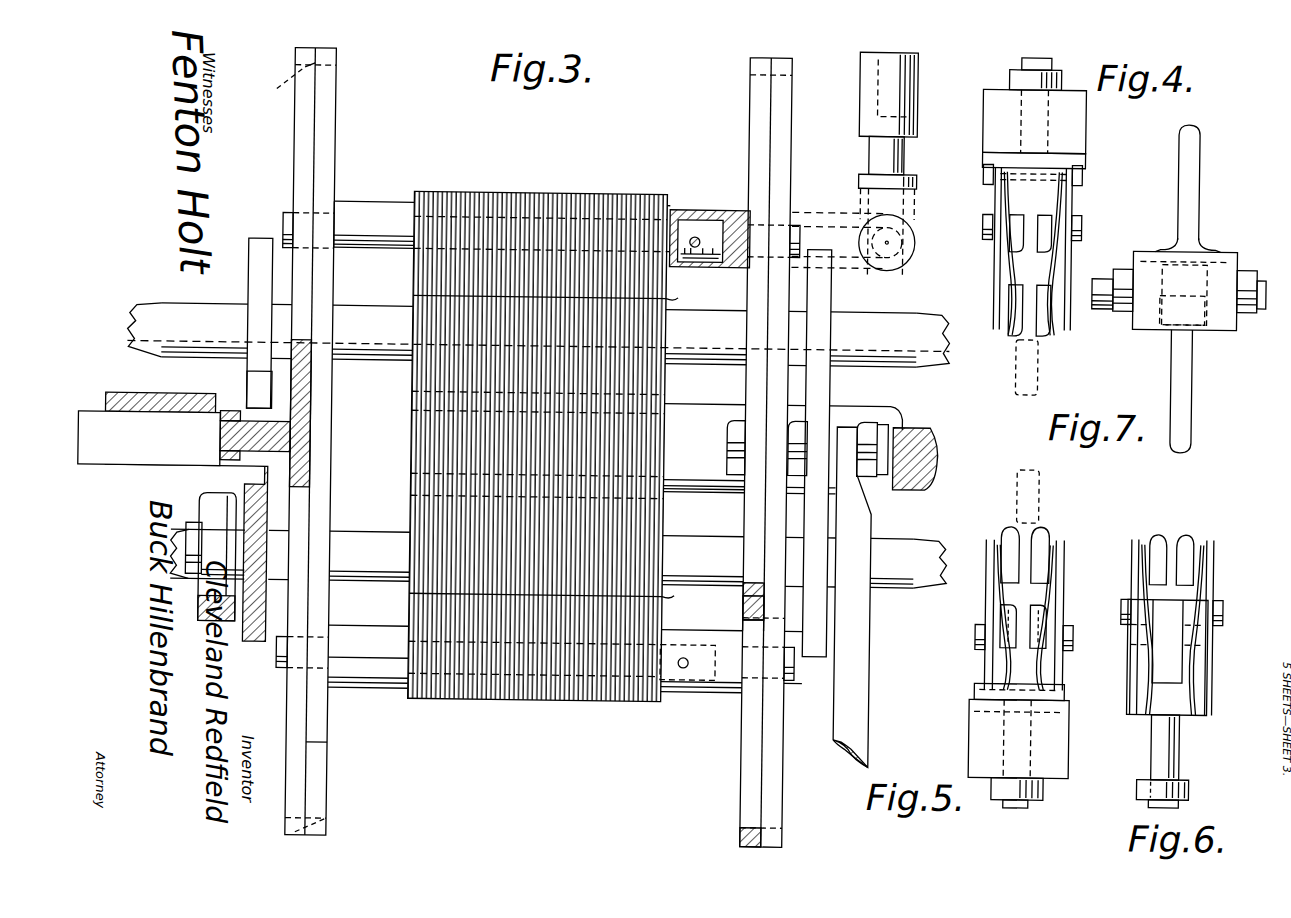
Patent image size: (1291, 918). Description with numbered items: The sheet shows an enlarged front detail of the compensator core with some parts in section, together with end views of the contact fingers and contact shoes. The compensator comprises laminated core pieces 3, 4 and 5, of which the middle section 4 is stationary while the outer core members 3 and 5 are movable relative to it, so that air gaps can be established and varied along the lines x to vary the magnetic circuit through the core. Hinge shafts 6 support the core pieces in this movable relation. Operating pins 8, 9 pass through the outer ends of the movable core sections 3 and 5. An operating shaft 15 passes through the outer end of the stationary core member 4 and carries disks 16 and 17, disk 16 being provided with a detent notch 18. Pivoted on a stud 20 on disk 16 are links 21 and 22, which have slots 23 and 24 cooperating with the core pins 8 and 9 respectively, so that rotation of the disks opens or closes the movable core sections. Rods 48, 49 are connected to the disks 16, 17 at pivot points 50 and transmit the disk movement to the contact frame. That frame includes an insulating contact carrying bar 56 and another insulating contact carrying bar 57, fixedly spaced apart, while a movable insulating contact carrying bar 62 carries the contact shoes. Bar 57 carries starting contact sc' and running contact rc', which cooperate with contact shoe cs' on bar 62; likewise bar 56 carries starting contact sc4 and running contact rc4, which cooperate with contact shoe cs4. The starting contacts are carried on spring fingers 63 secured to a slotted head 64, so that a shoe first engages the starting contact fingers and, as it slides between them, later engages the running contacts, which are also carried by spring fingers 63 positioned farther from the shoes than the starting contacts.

In FIG. 3, the core piece 3 is at (411, 270).
In FIG. 3, the middle core section 4 is at (411, 386).
In FIG. 3, the core piece 5 is at (411, 612).
In FIG. 3, the hinge shaft 6 is at (146, 322).
In FIG. 3, the operating pin 8 is at (282, 232).
In FIG. 3, the operating pin 9 is at (805, 684).
In FIG. 3, the operating shaft 15 is at (100, 415).
In FIG. 3, the disk 16 is at (250, 272).
In FIG. 3, the disk 17 is at (829, 296).
In FIG. 3, the detent notch 18 is at (252, 392).
In FIG. 3, the stud 20 is at (300, 436).
In FIG. 3, the link 21 is at (308, 141).
In FIG. 3, the link 22 is at (331, 747).
In FIG. 3, the slot 23 is at (284, 87).
In FIG. 3, the slot 24 is at (320, 814).
In FIG. 3, the rod 48 is at (203, 520).
In FIG. 3, the rod 49 is at (855, 630).
In FIG. 3, the pivot point 50 is at (895, 478).
In FIG. 3, the air gap line x is at (679, 449).
In FIG. 5, the insulating contact carrying bar 56 is at (1055, 748).
In FIG. 4, the insulating contact carrying bar 57 is at (1070, 124).
In FIG. 7, the movable insulating contact carrying bar 62 is at (1222, 322).
In FIG. 4, the spring finger 63 is at (1068, 265).
In FIG. 6, the spring finger 63 is at (1205, 612).
In FIG. 4, the slotted head 64 is at (1060, 186).
In FIG. 5, the slotted head 64 is at (1040, 670).
In FIG. 6, the slotted head 64 is at (1182, 672).
In FIG. 4, the running contact rc' is at (1071, 215).
In FIG. 4, the starting contact sc' is at (1062, 320).
In FIG. 4, the contact shoe cs' is at (1057, 368).
In FIG. 7, the contact shoe cs' is at (1204, 189).
In FIG. 7, the contact shoe cs4 is at (1193, 404).
In FIG. 5, the contact shoe cs4 is at (1037, 492).
In FIG. 5, the starting contact sc4 is at (1035, 545).
In FIG. 6, the starting contact sc4 is at (1185, 545).
In FIG. 5, the running contact rc4 is at (1040, 615).